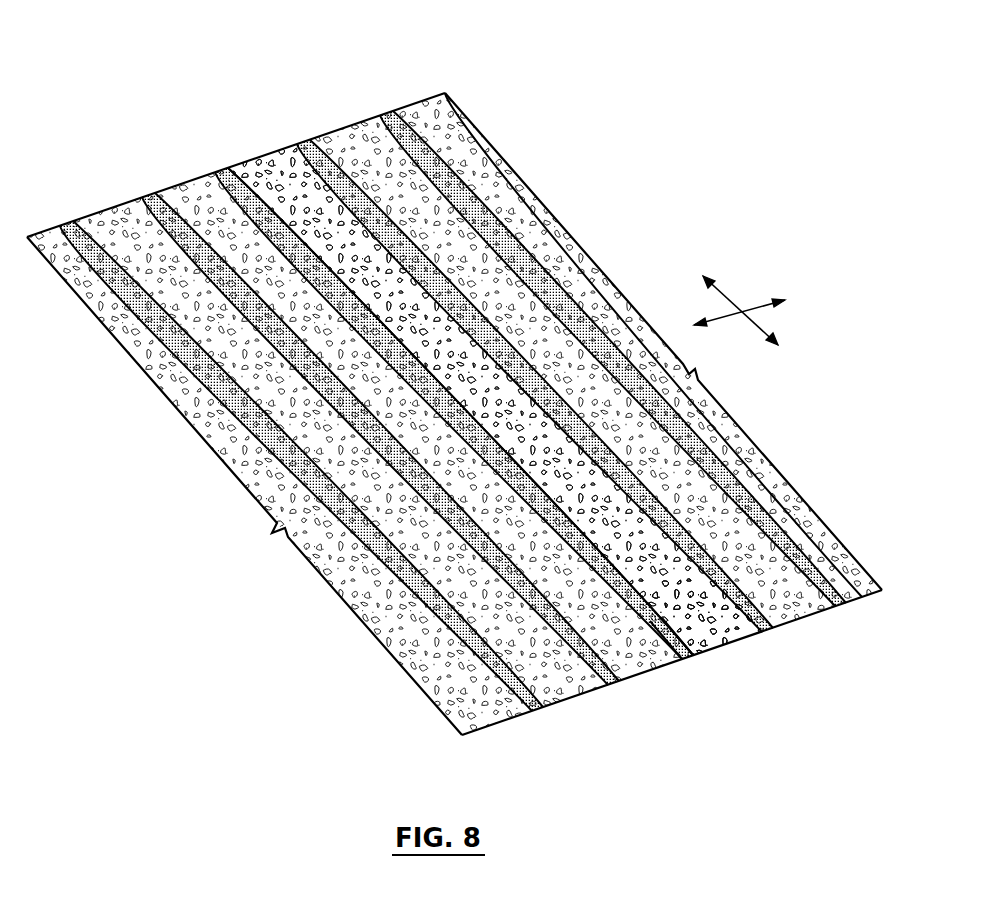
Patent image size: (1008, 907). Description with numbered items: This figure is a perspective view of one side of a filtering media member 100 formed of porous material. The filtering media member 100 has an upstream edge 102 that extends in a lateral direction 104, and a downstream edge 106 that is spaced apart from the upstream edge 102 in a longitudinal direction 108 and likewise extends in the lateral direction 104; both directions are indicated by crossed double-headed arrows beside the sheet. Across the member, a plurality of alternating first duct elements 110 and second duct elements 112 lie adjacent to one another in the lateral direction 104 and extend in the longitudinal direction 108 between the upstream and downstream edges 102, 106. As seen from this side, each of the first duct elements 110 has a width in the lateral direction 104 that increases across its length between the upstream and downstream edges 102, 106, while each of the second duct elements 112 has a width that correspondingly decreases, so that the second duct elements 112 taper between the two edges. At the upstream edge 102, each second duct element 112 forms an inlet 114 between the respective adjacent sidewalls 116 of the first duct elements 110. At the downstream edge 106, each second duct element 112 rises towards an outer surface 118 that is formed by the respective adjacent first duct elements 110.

The filtering media member 100 is at (578, 121).
The upstream edge 102 is at (97, 212).
The lateral direction 104 is at (762, 308).
The downstream edge 106 is at (812, 621).
The longitudinal direction 108 is at (727, 297).
The first duct elements 110 is at (213, 173).
The second duct elements 112 is at (695, 651).
The inlet 114 is at (293, 201).
The sidewalls 116 is at (253, 214).
The outer surface 118 is at (717, 625).